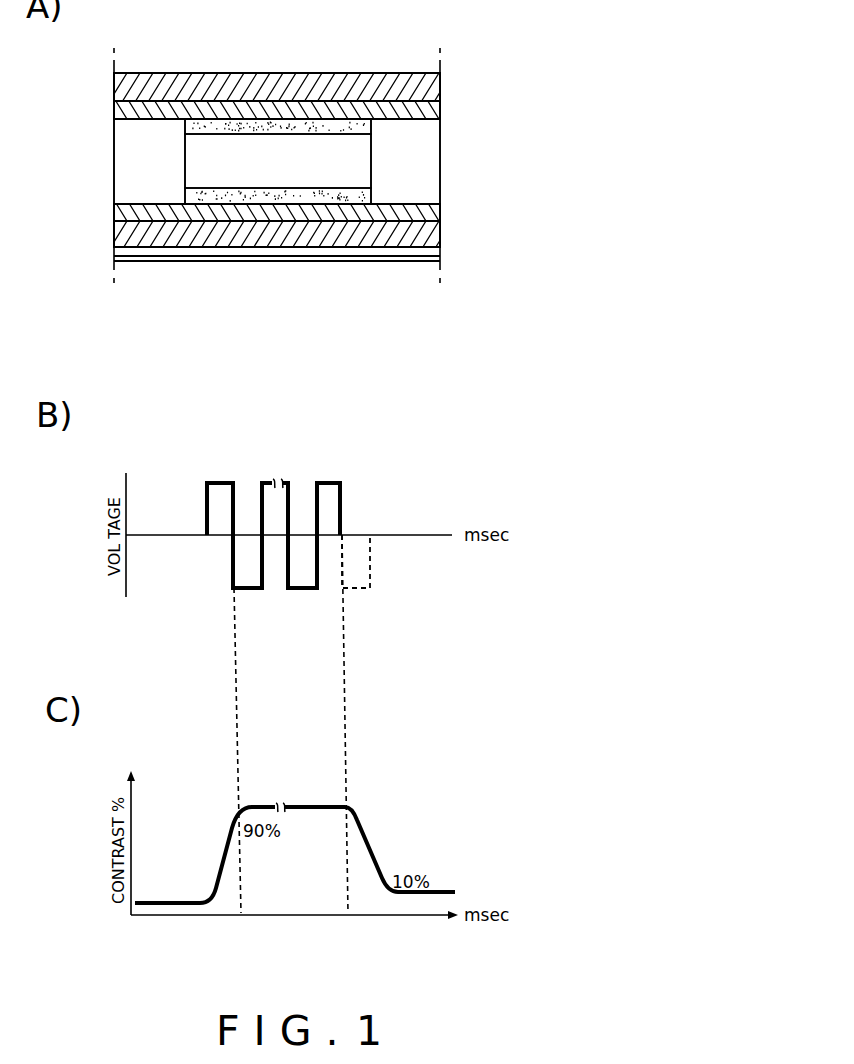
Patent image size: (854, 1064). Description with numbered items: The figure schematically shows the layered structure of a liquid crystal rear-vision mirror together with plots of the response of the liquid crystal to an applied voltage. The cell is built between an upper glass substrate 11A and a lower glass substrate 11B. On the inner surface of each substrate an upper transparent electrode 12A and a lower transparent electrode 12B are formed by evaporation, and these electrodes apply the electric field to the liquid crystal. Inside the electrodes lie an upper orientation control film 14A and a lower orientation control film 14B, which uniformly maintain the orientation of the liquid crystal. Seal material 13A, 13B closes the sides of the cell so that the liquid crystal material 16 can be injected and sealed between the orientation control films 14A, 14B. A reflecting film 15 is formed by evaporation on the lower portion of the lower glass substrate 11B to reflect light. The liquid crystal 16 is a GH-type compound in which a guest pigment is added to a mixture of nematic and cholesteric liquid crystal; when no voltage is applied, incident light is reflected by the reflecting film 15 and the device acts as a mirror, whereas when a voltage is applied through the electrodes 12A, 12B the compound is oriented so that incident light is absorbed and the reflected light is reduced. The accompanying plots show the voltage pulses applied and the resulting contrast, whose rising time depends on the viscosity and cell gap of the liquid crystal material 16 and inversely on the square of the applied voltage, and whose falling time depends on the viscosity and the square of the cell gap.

The upper glass substrate 11A is at (440, 86).
The lower glass substrate 11B is at (440, 236).
The upper transparent electrode 12A is at (440, 110).
The lower transparent electrode 12B is at (440, 212).
The seal material 13A is at (125, 166).
The seal material 13B is at (440, 158).
The upper orientation control film 14A is at (190, 125).
The lower orientation control film 14B is at (190, 195).
The reflecting film 15 is at (440, 252).
The liquid crystal material 16 is at (287, 168).